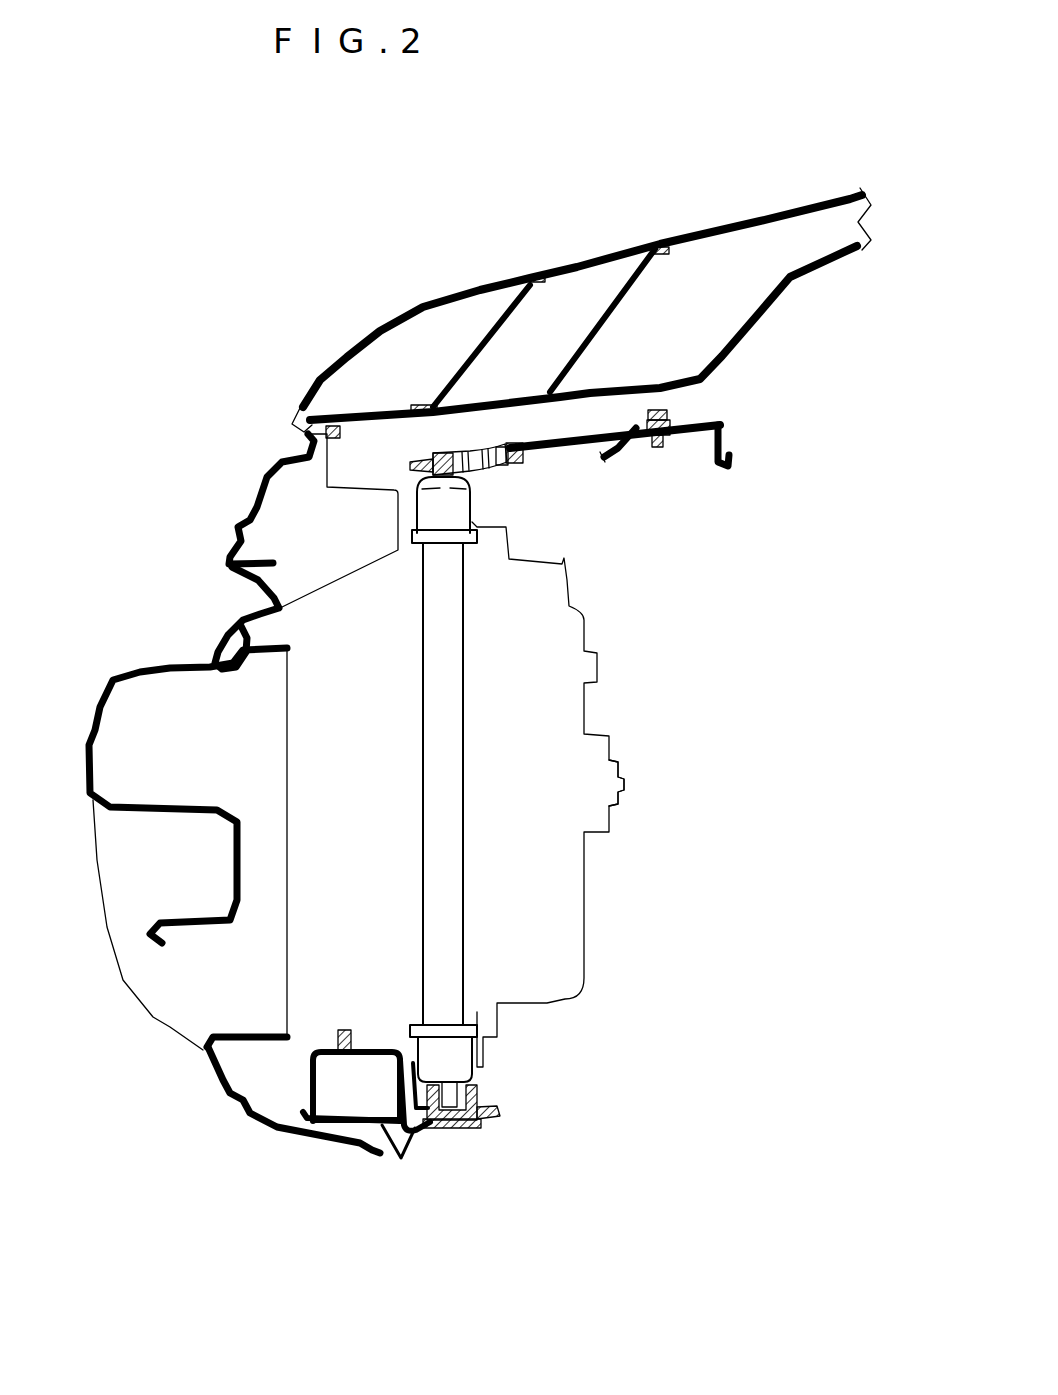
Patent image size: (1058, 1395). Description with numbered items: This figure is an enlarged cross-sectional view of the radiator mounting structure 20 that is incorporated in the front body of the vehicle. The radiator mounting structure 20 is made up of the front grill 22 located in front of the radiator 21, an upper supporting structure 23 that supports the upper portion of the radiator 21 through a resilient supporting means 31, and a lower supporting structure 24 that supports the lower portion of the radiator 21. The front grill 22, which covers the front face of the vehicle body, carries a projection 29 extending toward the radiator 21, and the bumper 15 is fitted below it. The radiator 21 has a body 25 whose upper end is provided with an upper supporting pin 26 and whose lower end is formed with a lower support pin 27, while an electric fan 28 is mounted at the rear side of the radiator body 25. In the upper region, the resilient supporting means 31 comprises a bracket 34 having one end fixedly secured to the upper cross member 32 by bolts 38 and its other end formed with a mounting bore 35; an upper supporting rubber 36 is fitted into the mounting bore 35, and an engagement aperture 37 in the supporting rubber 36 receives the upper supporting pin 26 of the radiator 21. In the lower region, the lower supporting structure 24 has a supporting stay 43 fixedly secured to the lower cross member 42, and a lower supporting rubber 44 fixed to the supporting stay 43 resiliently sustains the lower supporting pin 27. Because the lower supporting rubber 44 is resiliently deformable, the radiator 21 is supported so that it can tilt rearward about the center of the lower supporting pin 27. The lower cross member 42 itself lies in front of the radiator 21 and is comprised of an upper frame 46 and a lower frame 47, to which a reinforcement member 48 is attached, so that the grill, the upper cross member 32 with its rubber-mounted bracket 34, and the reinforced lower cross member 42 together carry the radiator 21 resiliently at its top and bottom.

The bumper 15 is at (175, 665).
The radiator mounting structure 20 is at (288, 262).
The radiator 21 is at (468, 661).
The front grill 22 is at (250, 478).
The upper supporting structure 23 is at (772, 395).
The lower supporting structure 24 is at (550, 1107).
The radiator body 25 is at (439, 794).
The upper supporting pin 26 is at (440, 466).
The lower support pin 27 is at (452, 1133).
The electric fan 28 is at (623, 778).
The projection 29 is at (343, 578).
The resilient supporting means 31 is at (522, 434).
The upper cross member 32 is at (729, 447).
The bracket 34 is at (613, 426).
The mounting bore 35 is at (498, 458).
The upper supporting rubber 36 is at (478, 450).
The engagement aperture 37 is at (440, 478).
The bolts 38 is at (665, 411).
The lower cross member 42 is at (305, 1084).
The supporting stay 43 is at (470, 1130).
The lower supporting rubber 44 is at (494, 1088).
The upper frame 46 is at (362, 1060).
The lower frame 47 is at (318, 1053).
The reinforcement member 48 is at (394, 1157).